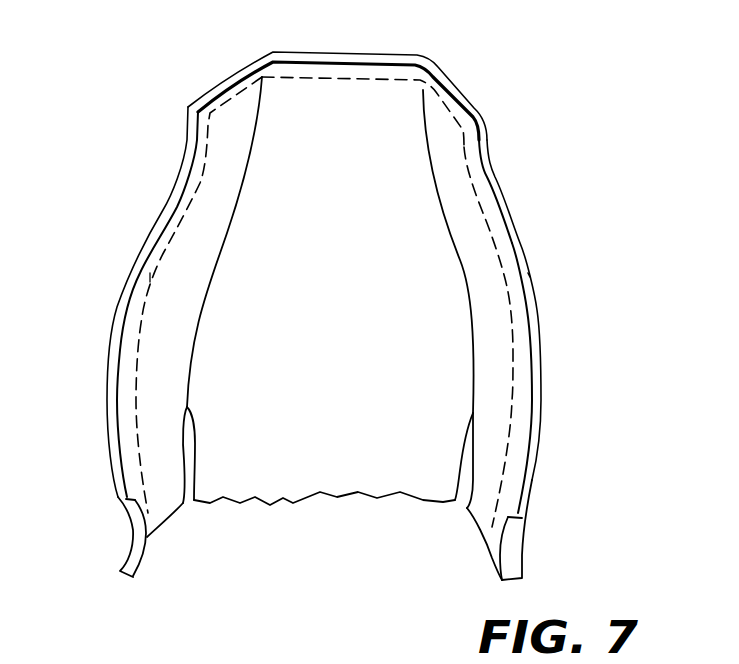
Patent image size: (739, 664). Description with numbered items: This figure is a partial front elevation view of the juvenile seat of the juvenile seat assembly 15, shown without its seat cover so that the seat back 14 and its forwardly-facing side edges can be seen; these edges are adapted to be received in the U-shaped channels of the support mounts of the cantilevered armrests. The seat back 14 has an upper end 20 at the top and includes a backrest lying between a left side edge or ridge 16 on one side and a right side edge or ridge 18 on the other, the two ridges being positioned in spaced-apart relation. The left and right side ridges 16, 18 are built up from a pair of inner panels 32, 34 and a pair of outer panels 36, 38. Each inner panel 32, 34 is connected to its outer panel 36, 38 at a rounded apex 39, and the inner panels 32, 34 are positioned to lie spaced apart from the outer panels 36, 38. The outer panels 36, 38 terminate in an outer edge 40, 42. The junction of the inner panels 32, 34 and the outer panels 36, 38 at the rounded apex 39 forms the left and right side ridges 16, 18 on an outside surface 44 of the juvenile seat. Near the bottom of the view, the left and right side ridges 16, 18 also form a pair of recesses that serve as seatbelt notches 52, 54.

The seat back 14 is at (292, 170).
The juvenile seat assembly 15 is at (362, 230).
The left side edge or ridge 16 is at (517, 418).
The right side edge or ridge 18 is at (137, 400).
The upper end 20 is at (348, 82).
The inner panel 32 is at (502, 322).
The inner panel 34 is at (160, 307).
The outer panel 36 is at (528, 273).
The outer panel 38 is at (150, 273).
The rounded apex 39 is at (112, 362).
The outer edge 40 is at (522, 247).
The outer edge 42 is at (178, 227).
The outside surface 44 is at (482, 243).
The seatbelt notch 52 is at (510, 547).
The seatbelt notch 54 is at (135, 542).